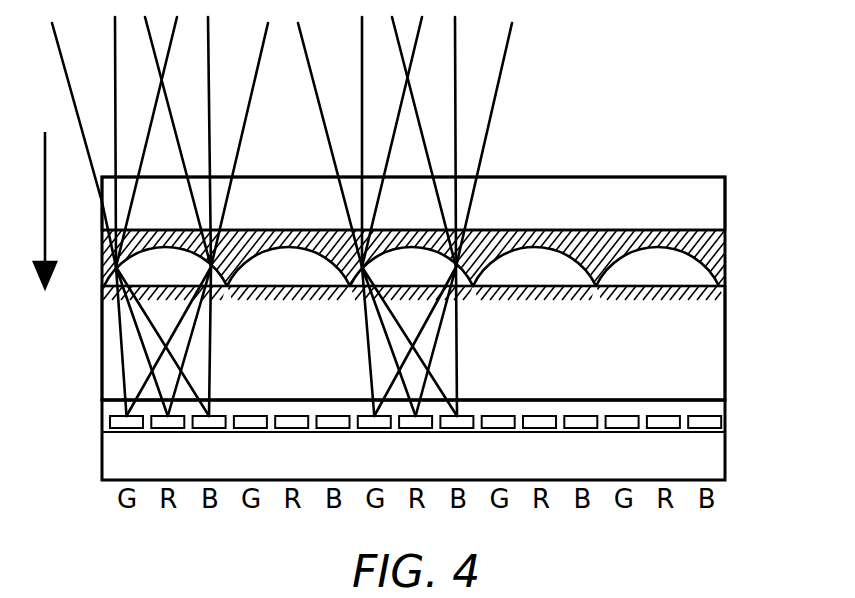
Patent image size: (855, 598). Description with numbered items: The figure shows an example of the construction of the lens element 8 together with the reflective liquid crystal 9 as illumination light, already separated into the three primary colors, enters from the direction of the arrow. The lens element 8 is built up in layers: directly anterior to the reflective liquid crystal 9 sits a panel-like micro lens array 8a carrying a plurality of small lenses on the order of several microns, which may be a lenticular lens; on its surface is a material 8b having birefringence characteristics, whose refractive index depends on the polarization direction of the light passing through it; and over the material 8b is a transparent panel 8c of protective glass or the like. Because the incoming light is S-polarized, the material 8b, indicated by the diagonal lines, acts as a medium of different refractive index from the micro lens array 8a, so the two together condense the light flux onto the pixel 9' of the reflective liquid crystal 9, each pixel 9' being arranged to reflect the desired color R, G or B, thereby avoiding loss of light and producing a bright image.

The lens element 8 is at (806, 180).
The micro lens array 8a is at (707, 340).
The material having birefringence characteristics 8b is at (725, 242).
The transparent panel 8c is at (705, 203).
The reflective liquid crystal 9 is at (459, 404).
The pixel 9' is at (415, 378).